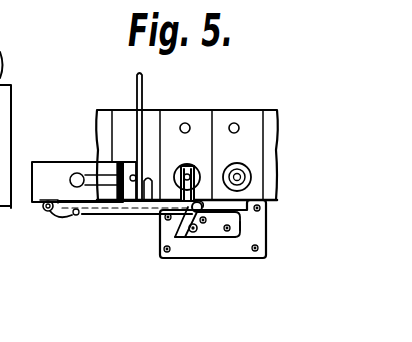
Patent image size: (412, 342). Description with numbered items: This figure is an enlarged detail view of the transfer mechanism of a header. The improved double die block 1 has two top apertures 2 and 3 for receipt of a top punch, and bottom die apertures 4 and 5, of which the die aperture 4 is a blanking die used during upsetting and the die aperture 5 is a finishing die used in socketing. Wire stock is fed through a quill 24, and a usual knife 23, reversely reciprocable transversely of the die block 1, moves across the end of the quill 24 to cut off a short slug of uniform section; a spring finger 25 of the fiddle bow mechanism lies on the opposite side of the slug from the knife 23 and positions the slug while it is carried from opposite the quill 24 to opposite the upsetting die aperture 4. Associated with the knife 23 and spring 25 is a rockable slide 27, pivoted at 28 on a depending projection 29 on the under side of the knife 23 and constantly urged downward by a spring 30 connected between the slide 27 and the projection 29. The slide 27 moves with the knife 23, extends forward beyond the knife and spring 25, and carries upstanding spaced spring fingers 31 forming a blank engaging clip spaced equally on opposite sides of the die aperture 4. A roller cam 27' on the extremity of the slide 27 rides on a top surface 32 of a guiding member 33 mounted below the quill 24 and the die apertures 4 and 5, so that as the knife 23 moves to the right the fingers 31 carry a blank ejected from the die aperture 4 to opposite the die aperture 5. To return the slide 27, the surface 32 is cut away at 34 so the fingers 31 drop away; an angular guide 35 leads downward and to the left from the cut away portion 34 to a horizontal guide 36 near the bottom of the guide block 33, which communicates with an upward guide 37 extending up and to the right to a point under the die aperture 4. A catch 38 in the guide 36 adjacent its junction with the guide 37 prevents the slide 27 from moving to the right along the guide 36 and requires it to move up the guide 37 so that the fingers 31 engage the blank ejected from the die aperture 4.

The double die block 1 is at (224, 115).
The top aperture 2 is at (186, 123).
The top aperture 3 is at (240, 124).
The blanking die aperture 4 is at (190, 163).
The finishing die aperture 5 is at (247, 171).
The knife 23 is at (128, 164).
The quill 24 is at (147, 178).
The spring finger 25 is at (143, 103).
The rockable slide 27 is at (126, 224).
The roller cam 27' is at (275, 180).
The pivot 28 is at (52, 215).
The depending projection 29 is at (43, 211).
The spring 30 is at (63, 215).
The spring fingers 31 is at (197, 182).
The top surface 32 is at (203, 208).
The guiding member 33 is at (258, 221).
The cut away portion 34 is at (247, 219).
The angular guide 35 is at (240, 230).
The horizontal guide 36 is at (218, 240).
The upward guide 37 is at (175, 228).
The catch 38 is at (192, 233).